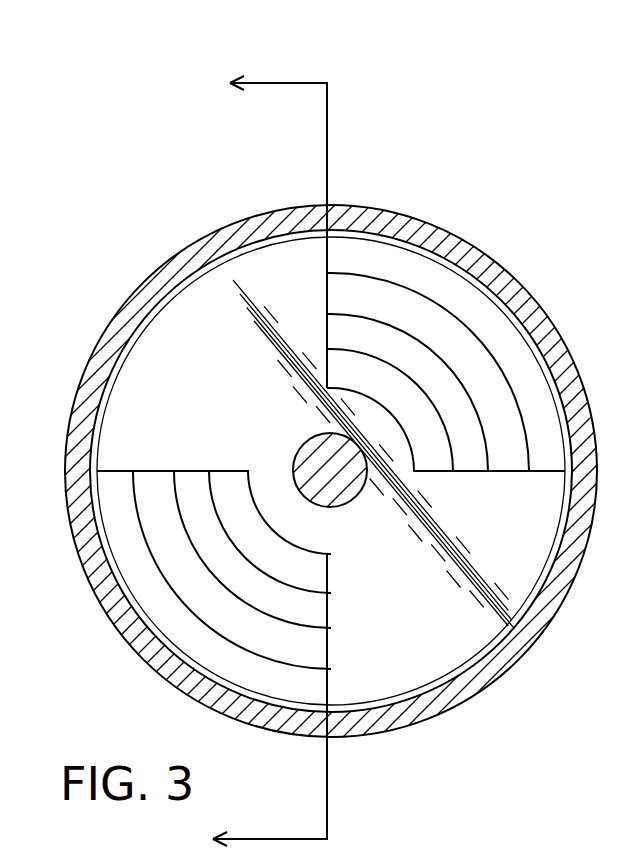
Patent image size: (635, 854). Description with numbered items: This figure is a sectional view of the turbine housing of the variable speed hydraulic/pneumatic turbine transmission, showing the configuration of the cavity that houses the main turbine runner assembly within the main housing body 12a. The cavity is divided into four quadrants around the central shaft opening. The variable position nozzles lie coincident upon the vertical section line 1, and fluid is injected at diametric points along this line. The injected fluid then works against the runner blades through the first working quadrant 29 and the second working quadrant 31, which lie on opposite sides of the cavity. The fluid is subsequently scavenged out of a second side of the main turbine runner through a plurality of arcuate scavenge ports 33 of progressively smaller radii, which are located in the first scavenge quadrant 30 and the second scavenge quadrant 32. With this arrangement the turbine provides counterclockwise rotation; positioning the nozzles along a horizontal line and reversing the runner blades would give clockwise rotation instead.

The vertical section line 1 is at (270, 461).
The main housing body 12a is at (72, 366).
The first working quadrant 29 is at (208, 366).
The first scavenge quadrant 30 is at (218, 613).
The second working quadrant 31 is at (421, 613).
The second scavenge quadrant 32 is at (475, 363).
The arcuate scavenge ports 33 is at (423, 433).